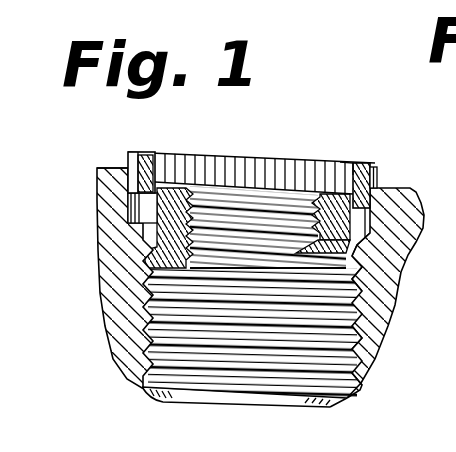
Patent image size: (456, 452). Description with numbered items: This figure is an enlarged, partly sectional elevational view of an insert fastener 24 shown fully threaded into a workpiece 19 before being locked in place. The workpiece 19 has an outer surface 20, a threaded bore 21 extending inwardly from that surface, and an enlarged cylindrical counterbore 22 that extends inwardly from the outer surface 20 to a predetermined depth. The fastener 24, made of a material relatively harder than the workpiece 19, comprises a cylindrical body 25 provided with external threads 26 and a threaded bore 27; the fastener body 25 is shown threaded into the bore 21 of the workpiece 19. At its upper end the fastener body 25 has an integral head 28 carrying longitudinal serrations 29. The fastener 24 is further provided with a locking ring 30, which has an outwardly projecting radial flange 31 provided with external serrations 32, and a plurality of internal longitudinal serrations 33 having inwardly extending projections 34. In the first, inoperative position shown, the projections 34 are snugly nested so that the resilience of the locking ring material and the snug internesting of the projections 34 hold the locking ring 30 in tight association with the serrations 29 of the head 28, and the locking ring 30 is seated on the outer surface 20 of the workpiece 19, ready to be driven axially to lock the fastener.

The workpiece 19 is at (107, 262).
The outer surface 20 is at (100, 172).
The threaded bore 21 is at (355, 288).
The cylindrical counterbore 22 is at (143, 213).
The fastener 24 is at (163, 402).
The cylindrical body 25 is at (338, 315).
The external threads 26 is at (346, 340).
The threaded bore 27 is at (366, 374).
The head 28 is at (347, 222).
The longitudinal serrations 29 is at (393, 248).
The locking ring 30 is at (353, 166).
The radial flange 31 is at (366, 164).
The external serrations 32 is at (378, 170).
The internal longitudinal serrations 33 is at (205, 165).
The projections 34 is at (125, 182).